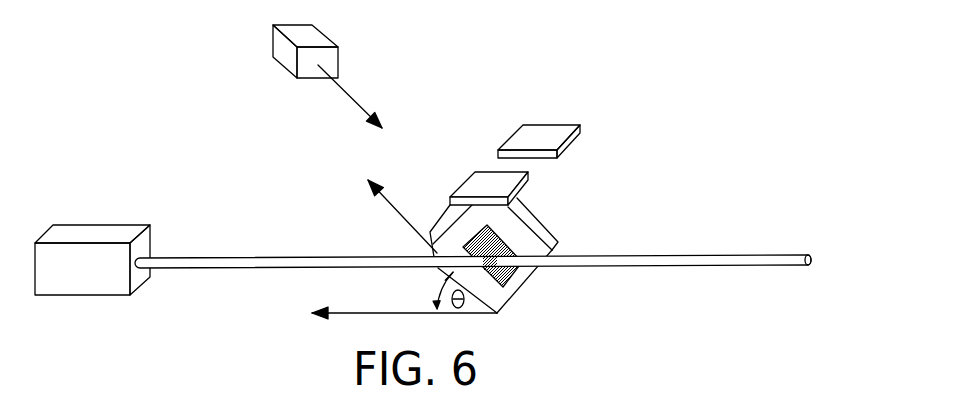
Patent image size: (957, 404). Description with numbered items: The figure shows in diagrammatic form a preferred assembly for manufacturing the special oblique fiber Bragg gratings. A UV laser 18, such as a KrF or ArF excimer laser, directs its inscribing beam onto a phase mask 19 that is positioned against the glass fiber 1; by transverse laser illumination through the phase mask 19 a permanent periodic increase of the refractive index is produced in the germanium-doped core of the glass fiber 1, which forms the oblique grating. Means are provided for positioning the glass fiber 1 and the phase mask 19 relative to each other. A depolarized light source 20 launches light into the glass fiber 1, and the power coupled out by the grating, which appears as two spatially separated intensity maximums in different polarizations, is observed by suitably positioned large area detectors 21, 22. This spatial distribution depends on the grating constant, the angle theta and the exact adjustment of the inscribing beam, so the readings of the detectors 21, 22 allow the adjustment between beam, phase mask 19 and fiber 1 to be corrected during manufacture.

The glass fiber 1 is at (657, 267).
The UV laser 18 is at (290, 62).
The phase mask 19 is at (525, 218).
The depolarized light source 20 is at (98, 232).
The large area detector 21 is at (513, 180).
The large area detector 22 is at (552, 128).